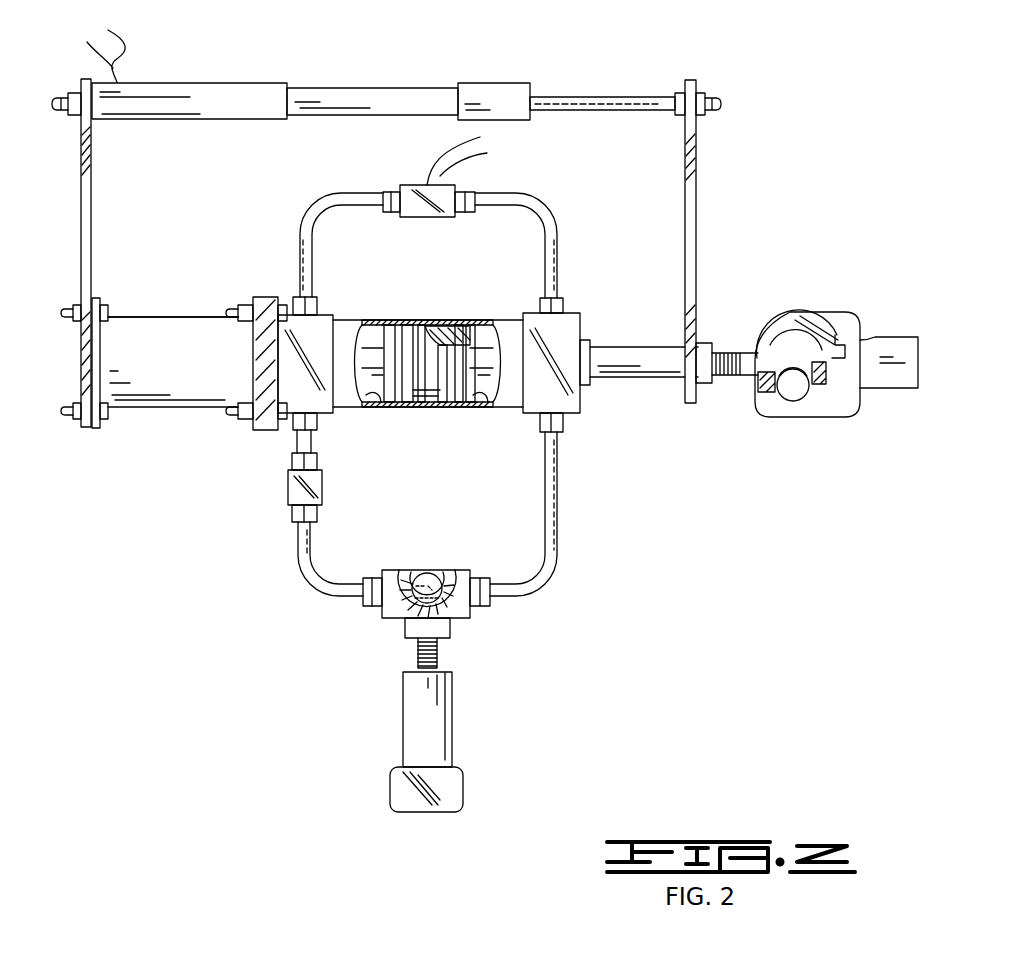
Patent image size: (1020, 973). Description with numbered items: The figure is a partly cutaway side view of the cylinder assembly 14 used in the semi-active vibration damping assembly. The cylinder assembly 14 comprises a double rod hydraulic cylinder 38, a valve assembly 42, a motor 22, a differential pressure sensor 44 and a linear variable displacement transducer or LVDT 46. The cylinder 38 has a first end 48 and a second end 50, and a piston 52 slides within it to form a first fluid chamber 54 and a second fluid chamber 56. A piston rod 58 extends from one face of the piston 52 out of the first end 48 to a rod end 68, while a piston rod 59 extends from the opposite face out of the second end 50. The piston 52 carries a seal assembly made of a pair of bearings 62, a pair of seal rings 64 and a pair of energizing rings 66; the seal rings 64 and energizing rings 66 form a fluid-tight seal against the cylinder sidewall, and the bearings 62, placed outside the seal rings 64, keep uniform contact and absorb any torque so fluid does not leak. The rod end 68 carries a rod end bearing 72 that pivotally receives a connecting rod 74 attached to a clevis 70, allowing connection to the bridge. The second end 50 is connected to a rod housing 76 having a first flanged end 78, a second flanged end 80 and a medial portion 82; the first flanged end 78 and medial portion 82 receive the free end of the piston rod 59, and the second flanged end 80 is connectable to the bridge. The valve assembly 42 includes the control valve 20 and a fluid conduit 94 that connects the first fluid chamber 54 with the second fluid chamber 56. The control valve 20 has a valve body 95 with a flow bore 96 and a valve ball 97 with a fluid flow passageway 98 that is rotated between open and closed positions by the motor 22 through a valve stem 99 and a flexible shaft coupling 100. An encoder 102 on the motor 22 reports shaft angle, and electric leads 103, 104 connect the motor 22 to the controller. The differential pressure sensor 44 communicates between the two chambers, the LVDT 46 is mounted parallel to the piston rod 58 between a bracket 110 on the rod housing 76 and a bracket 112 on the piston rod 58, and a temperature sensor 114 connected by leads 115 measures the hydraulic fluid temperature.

The cylinder assembly 14 is at (800, 158).
The control valve 20 is at (433, 570).
The motor 22 is at (452, 718).
The double rod hydraulic cylinder 38 is at (582, 316).
The valve assembly 42 is at (393, 625).
The differential pressure sensor 44 is at (408, 186).
The linear variable displacement transducer 46 is at (412, 83).
The first end 48 is at (583, 410).
The second end 50 is at (268, 297).
The piston 52 is at (438, 410).
The first fluid chamber 54 is at (487, 405).
The second fluid chamber 56 is at (378, 405).
The piston rod 58 is at (488, 350).
The piston rod 59 is at (370, 350).
The bearings 62 is at (393, 330).
The seal rings 64 is at (448, 335).
The energizing rings 66 is at (435, 325).
The rod end 68 is at (755, 348).
The clevis 70 is at (848, 395).
The rod end bearing 72 is at (770, 392).
The connecting rod 74 is at (797, 398).
The rod housing 76 is at (165, 410).
The first flanged end 78 is at (255, 428).
The second flanged end 80 is at (97, 420).
The medial portion 82 is at (203, 318).
The fluid conduit 94 is at (560, 488).
The valve body 95 is at (475, 615).
The flow bore 96 is at (462, 575).
The valve ball 97 is at (392, 572).
The fluid flow passageway 98 is at (440, 570).
The valve stem 99 is at (418, 640).
The shaft coupling 100 is at (440, 652).
The encoder 102 is at (390, 790).
The electric lead 103 is at (463, 788).
The electric lead 104 is at (463, 790).
The bracket 110 is at (93, 190).
The bracket 112 is at (697, 228).
The temperature sensor 114 is at (322, 487).
The leads 115 is at (288, 481).